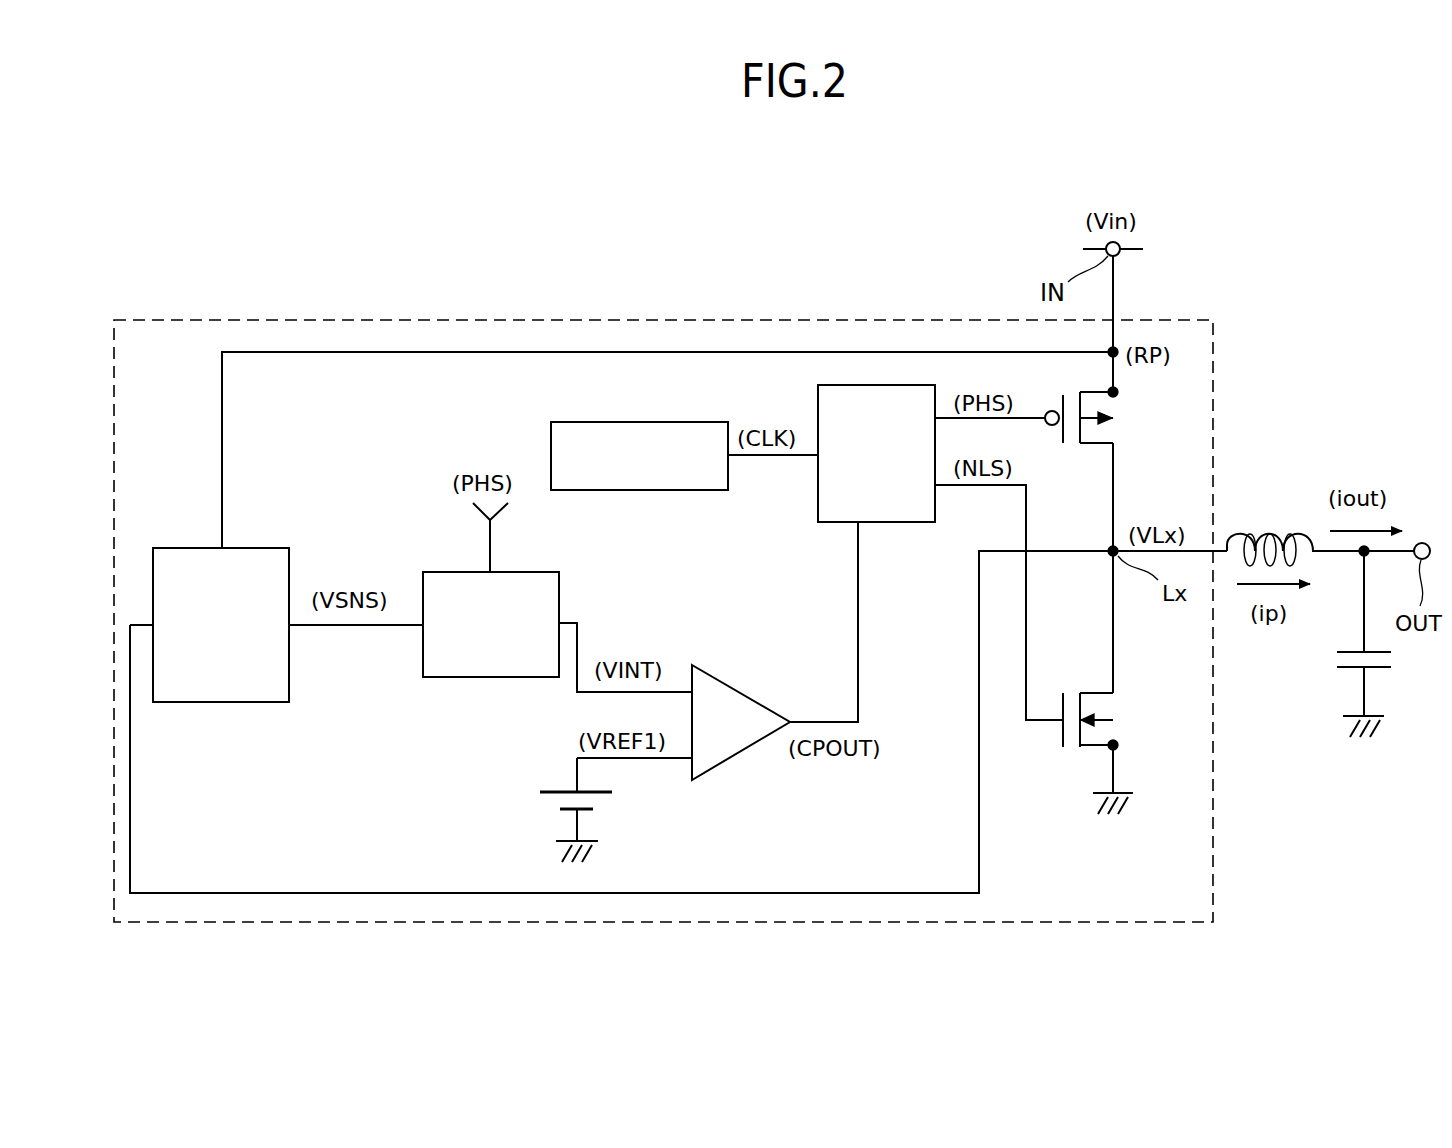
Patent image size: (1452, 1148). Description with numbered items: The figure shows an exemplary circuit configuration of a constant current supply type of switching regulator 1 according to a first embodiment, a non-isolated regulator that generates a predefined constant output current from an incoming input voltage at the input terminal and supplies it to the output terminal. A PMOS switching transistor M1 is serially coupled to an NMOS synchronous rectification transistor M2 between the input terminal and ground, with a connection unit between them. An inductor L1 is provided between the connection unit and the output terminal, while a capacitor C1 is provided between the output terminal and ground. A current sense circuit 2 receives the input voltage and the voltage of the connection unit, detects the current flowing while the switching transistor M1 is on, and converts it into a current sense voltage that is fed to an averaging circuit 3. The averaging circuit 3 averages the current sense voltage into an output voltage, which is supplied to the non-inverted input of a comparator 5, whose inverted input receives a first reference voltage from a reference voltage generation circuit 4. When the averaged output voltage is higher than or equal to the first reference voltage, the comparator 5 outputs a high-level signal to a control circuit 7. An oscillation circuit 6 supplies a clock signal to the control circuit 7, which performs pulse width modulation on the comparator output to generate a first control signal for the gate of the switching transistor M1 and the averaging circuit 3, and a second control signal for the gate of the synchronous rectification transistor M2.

The switching regulator 1 is at (1236, 284).
The current sense circuit 2 is at (221, 705).
The averaging circuit 3 is at (436, 680).
The reference voltage generation circuit 4 is at (553, 798).
The comparator 5 is at (738, 757).
The oscillation circuit 6 is at (636, 492).
The control circuit 7 is at (893, 525).
The switching transistor M1 is at (1101, 417).
The synchronous rectification transistor M2 is at (1110, 720).
The inductor L1 is at (1277, 532).
The capacitor C1 is at (1345, 646).